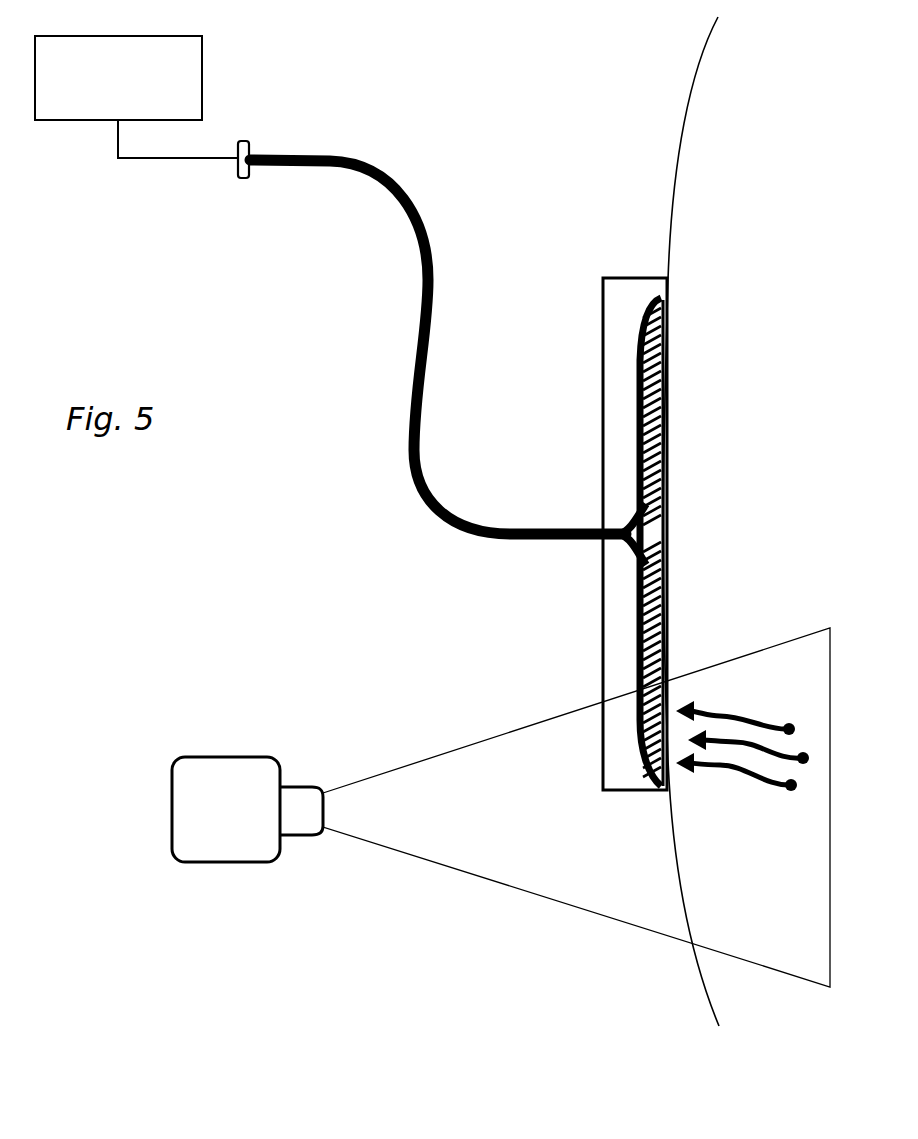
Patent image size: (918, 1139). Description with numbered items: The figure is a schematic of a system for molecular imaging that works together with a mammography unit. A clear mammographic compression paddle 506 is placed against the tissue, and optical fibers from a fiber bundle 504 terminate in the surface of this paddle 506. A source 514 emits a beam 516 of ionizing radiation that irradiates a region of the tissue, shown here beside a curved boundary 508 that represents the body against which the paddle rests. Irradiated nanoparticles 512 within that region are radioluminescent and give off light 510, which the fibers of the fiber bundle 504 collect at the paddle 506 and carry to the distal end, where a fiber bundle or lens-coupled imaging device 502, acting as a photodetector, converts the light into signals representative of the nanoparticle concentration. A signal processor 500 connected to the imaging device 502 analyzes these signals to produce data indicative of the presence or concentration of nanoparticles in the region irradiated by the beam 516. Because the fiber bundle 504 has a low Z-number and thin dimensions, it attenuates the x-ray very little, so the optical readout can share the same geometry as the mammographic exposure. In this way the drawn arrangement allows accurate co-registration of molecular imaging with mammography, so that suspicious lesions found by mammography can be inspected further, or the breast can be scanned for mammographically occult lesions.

The signal processor 500 is at (92, 76).
The lens-coupled imaging device 502 is at (236, 168).
The fiber bundle 504 is at (409, 458).
The mammographic compression paddle 506 is at (598, 597).
The body surface 508 is at (755, 201).
The light 510 is at (733, 782).
The irradiated nanoparticles 512 is at (792, 792).
The source 514 is at (202, 755).
The beam of ionizing radiation 516 is at (508, 884).